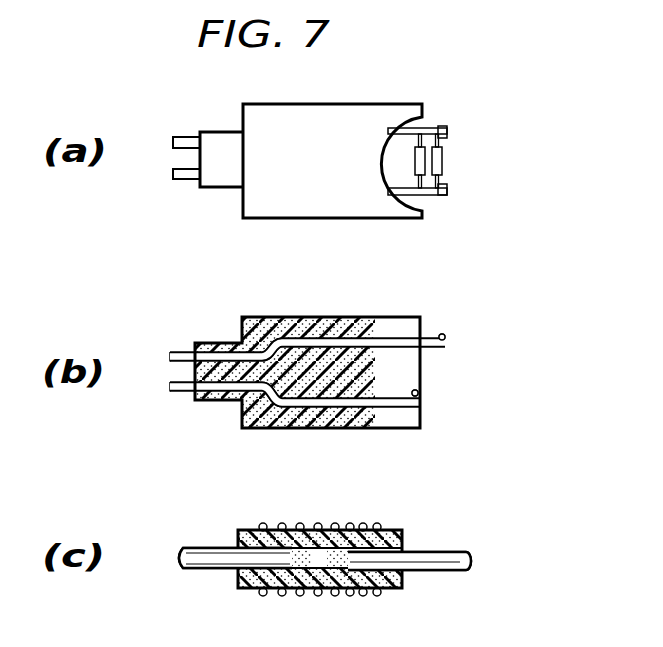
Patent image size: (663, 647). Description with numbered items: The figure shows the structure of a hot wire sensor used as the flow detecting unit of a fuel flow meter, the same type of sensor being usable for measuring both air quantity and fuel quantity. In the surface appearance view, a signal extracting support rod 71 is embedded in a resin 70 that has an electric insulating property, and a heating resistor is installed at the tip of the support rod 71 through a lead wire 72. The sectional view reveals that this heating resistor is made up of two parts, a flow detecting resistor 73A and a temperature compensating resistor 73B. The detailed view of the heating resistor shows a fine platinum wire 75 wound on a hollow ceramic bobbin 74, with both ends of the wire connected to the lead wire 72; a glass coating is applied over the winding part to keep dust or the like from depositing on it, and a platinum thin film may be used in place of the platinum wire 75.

The resin 70 is at (366, 105).
The signal extracting support rod 71 is at (182, 135).
The lead wire 72 is at (447, 141).
The flow detecting resistor 73A is at (445, 163).
The temperature compensating resistor 73B is at (414, 163).
The hollow ceramic bobbin 74 is at (391, 533).
The fine platinum wire 75 is at (303, 530).